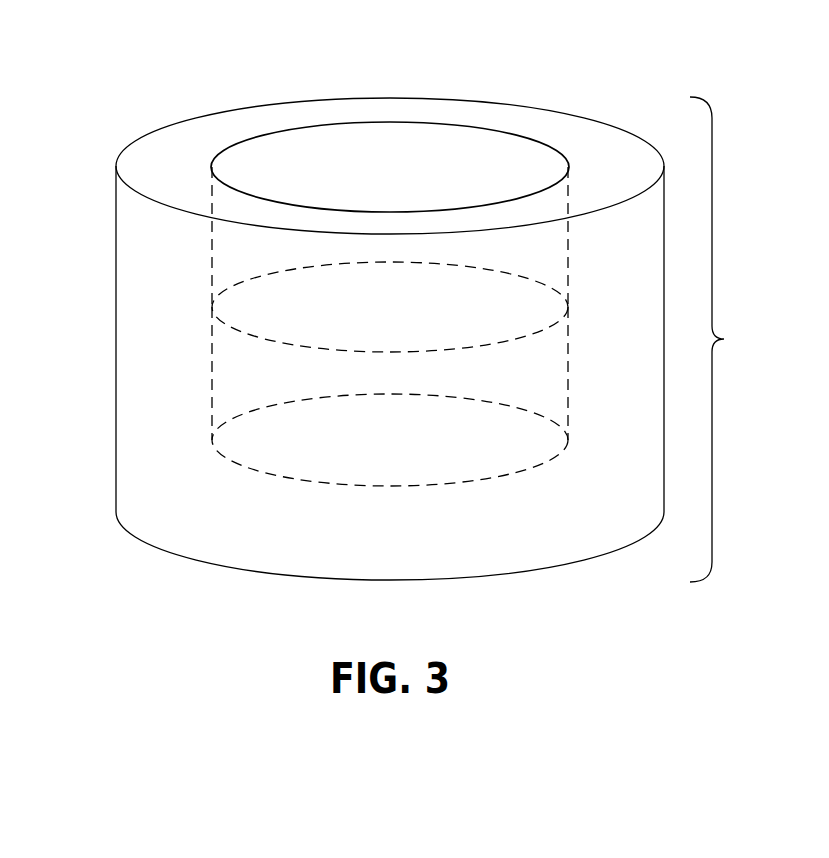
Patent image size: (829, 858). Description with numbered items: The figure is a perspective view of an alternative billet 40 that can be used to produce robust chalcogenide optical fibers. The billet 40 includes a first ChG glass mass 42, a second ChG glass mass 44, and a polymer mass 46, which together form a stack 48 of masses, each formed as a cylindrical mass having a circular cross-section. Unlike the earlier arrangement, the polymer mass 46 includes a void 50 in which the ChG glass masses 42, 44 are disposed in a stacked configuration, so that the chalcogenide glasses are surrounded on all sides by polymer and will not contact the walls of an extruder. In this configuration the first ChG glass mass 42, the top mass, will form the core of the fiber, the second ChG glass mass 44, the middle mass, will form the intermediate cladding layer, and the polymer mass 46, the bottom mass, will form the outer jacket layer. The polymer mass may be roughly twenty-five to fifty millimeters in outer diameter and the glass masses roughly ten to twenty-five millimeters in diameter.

The billet 40 is at (66, 84).
The first ChG glass mass 42 is at (223, 244).
The second ChG glass mass 44 is at (224, 386).
The polymer mass 46 is at (134, 340).
The stack of masses 48 is at (727, 339).
The void 50 is at (541, 143).